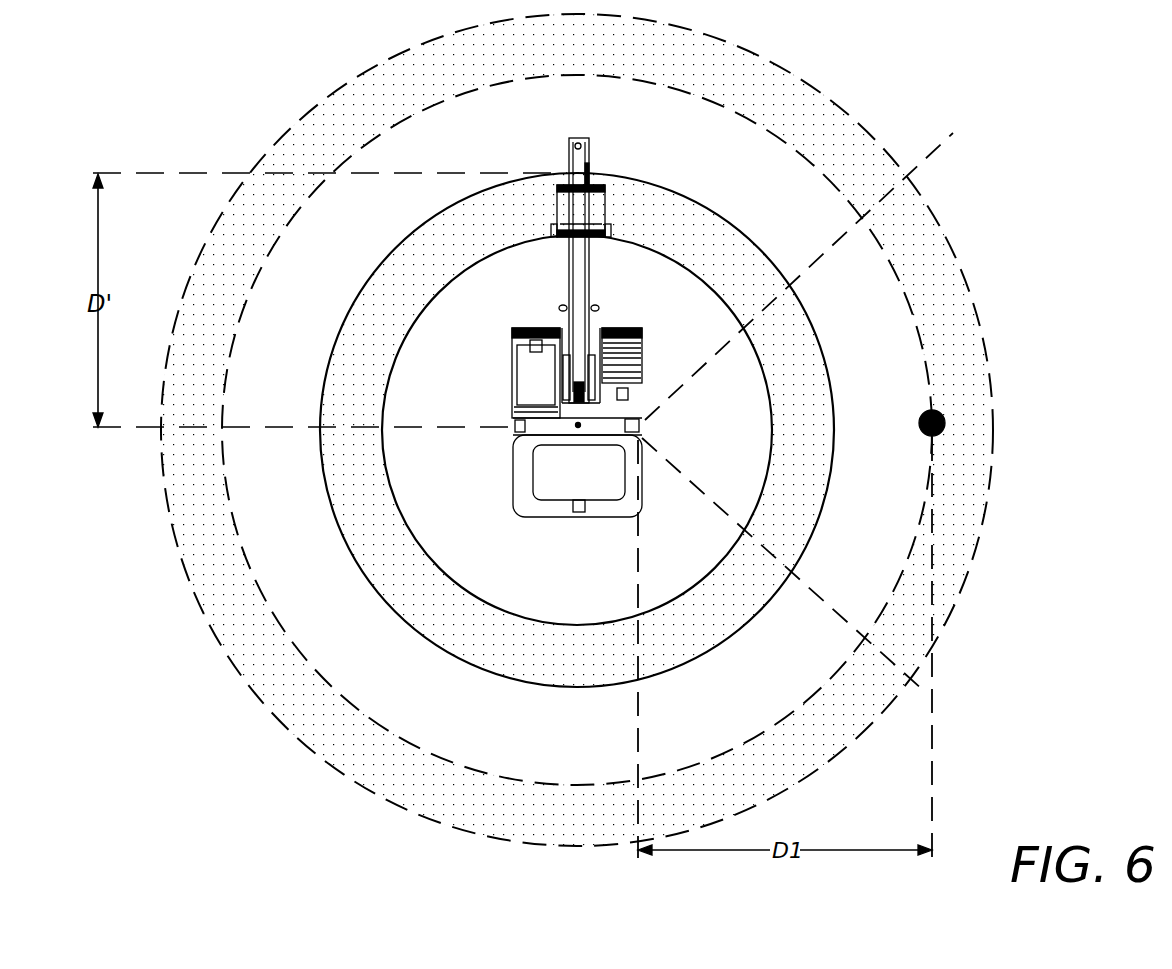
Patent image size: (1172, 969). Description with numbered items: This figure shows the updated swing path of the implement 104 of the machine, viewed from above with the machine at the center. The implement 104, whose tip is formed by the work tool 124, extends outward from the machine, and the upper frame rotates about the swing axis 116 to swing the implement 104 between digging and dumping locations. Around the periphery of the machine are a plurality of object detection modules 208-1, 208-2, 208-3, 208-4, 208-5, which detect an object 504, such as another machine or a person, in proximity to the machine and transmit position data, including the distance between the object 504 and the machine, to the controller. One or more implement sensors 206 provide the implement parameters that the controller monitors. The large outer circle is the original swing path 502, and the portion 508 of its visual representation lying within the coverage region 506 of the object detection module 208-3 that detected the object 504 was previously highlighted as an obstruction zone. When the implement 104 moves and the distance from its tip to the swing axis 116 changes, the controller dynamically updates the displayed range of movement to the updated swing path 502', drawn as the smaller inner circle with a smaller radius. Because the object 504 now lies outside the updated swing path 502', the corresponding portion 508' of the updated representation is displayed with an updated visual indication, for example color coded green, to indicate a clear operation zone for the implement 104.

The implement 104 is at (598, 163).
The work tool 124 is at (600, 205).
The implement sensor 206 is at (597, 315).
The object detection module 208-1 is at (545, 328).
The object detection module 208-2 is at (614, 358).
The object detection module 208-3 is at (642, 428).
The object detection module 208-4 is at (578, 512).
The object detection module 208-5 is at (520, 428).
The swing axis 116 is at (578, 426).
The swing path 502 is at (577, 430).
The updated swing path 502' is at (577, 425).
The object 504 is at (945, 421).
The coverage region 506 is at (933, 148).
The portion of swing path representation 508 is at (615, 430).
The portion of updated swing path representation 508' is at (619, 430).